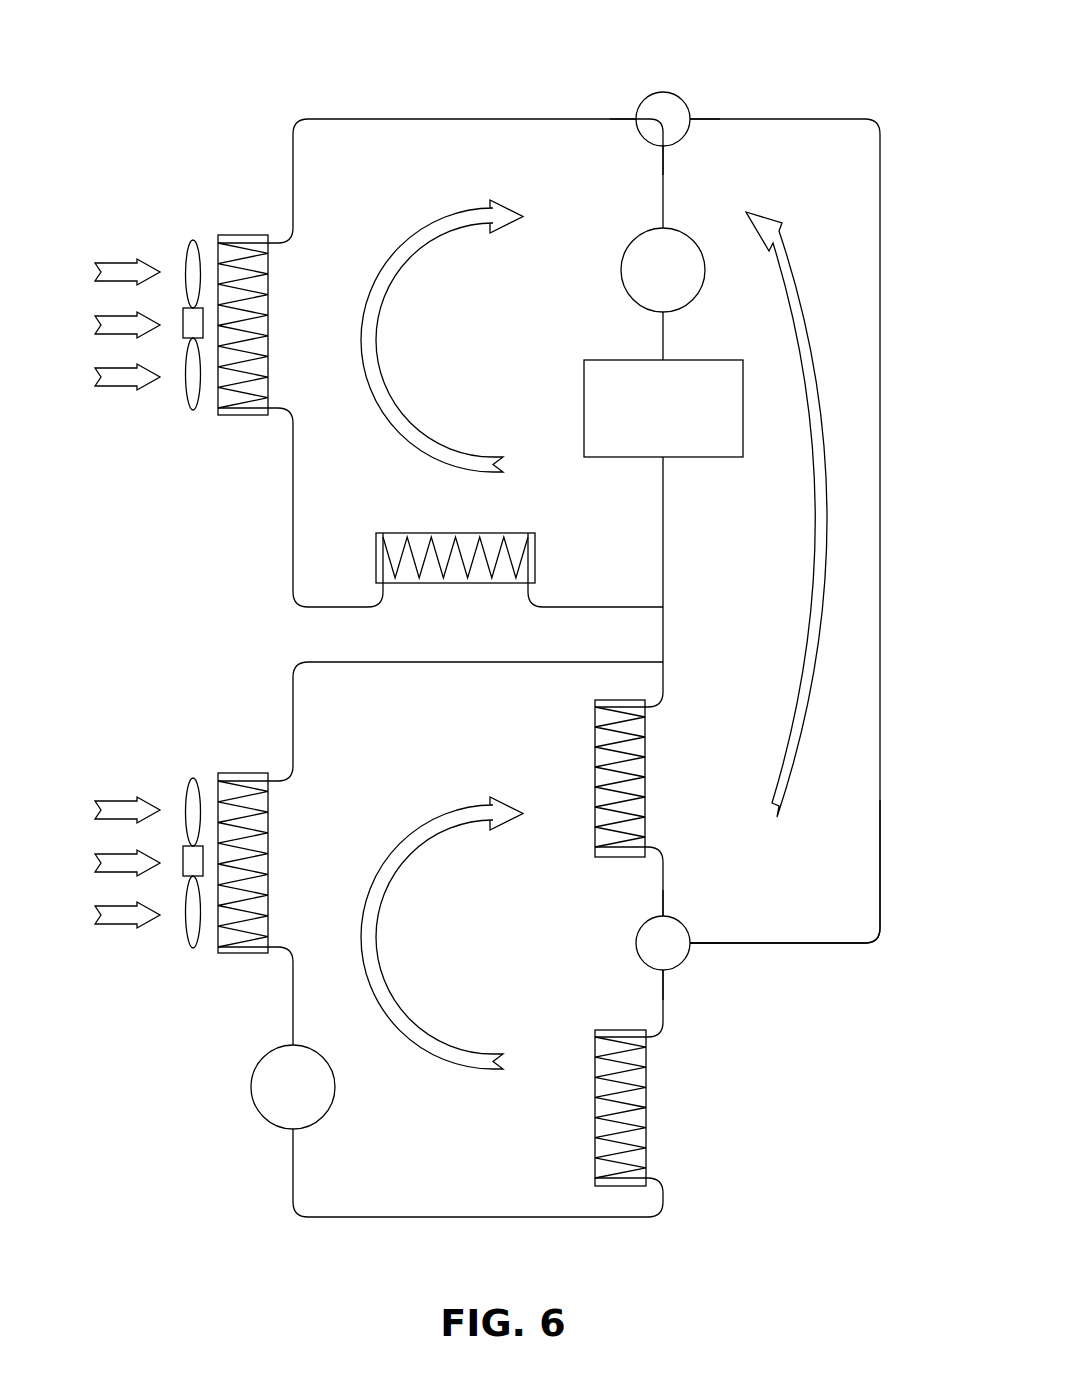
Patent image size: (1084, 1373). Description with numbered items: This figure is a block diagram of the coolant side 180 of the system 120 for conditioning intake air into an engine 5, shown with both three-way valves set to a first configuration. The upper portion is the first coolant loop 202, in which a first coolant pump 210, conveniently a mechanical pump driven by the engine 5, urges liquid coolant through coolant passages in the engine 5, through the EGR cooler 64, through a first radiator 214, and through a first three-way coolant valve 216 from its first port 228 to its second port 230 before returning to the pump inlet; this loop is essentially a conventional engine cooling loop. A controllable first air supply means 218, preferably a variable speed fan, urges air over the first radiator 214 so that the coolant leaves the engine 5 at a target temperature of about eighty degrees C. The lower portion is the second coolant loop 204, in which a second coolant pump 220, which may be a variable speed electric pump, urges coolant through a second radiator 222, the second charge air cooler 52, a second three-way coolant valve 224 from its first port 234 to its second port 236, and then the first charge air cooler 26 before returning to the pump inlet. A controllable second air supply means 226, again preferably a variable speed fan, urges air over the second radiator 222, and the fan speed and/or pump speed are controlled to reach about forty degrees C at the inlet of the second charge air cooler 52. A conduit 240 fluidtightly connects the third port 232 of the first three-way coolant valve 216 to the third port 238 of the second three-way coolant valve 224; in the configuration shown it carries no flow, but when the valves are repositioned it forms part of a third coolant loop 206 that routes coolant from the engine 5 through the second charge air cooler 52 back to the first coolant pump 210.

The engine 5 is at (604, 360).
The first charge air cooler 26 is at (646, 1160).
The second charge air cooler 52 is at (597, 714).
The EGR cooler 64 is at (390, 533).
The system for conditioning intake air 120 is at (288, 46).
The coolant side 180 is at (241, 87).
The first coolant loop 202 is at (500, 119).
The second coolant loop 204 is at (350, 1218).
The third coolant loop 206 is at (882, 153).
The first coolant pump 210 is at (639, 236).
The first radiator 214 is at (224, 236).
The first three-way coolant valve 216 is at (686, 104).
The first air supply means 218 is at (188, 250).
The second coolant pump 220 is at (260, 1115).
The second radiator 222 is at (224, 773).
The second three-way coolant valve 224 is at (690, 952).
The second air supply means 226 is at (188, 787).
The first port 228 is at (637, 119).
The second port 230 is at (662, 145).
The third port 232 is at (692, 121).
The first port 234 is at (661, 917).
The second port 236 is at (662, 970).
The third port 238 is at (692, 941).
The conduit 240 is at (881, 917).